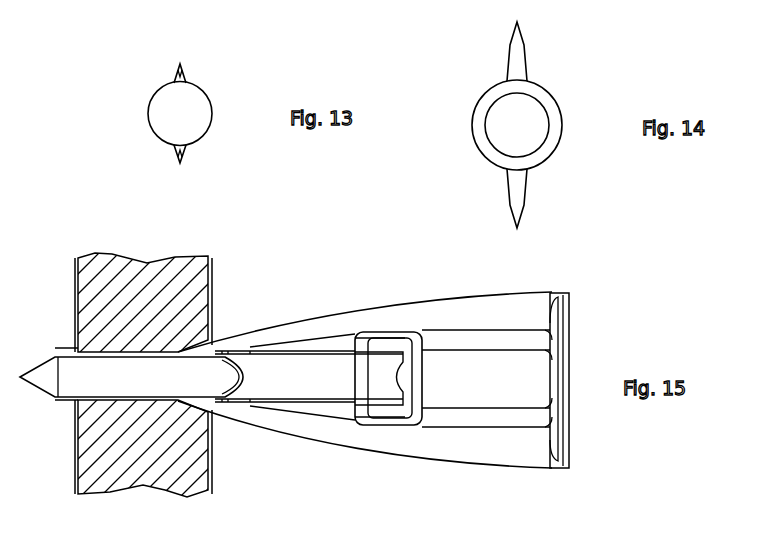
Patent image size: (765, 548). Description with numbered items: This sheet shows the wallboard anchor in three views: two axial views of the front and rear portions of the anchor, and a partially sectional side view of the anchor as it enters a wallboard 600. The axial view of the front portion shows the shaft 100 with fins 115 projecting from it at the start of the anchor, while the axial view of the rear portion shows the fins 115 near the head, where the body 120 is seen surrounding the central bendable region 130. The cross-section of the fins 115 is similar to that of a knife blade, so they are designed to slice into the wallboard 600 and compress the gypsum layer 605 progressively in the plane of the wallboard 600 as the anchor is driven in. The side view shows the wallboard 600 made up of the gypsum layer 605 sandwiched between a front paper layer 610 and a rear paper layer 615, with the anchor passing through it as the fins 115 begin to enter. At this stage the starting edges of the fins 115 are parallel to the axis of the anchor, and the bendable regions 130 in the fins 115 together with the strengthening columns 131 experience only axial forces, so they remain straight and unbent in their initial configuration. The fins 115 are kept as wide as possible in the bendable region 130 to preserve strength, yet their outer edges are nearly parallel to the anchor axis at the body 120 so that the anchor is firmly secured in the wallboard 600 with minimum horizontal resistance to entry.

In FIG. 13, the shaft 100 is at (212, 113).
In FIG. 13, the fins 115 is at (183, 73).
In FIG. 14, the fins 115 is at (525, 53).
In FIG. 15, the fins 115 is at (470, 296).
In FIG. 14, the body 120 is at (563, 127).
In FIG. 14, the bendable regions 130 is at (487, 125).
In FIG. 15, the bendable regions 130 is at (410, 293).
In FIG. 15, the strengthening columns 131 is at (382, 332).
In FIG. 15, the wallboard 600 is at (252, 277).
In FIG. 15, the gypsum layer 605 is at (147, 262).
In FIG. 15, the front paper layer 610 is at (212, 278).
In FIG. 15, the rear paper layer 615 is at (76, 278).